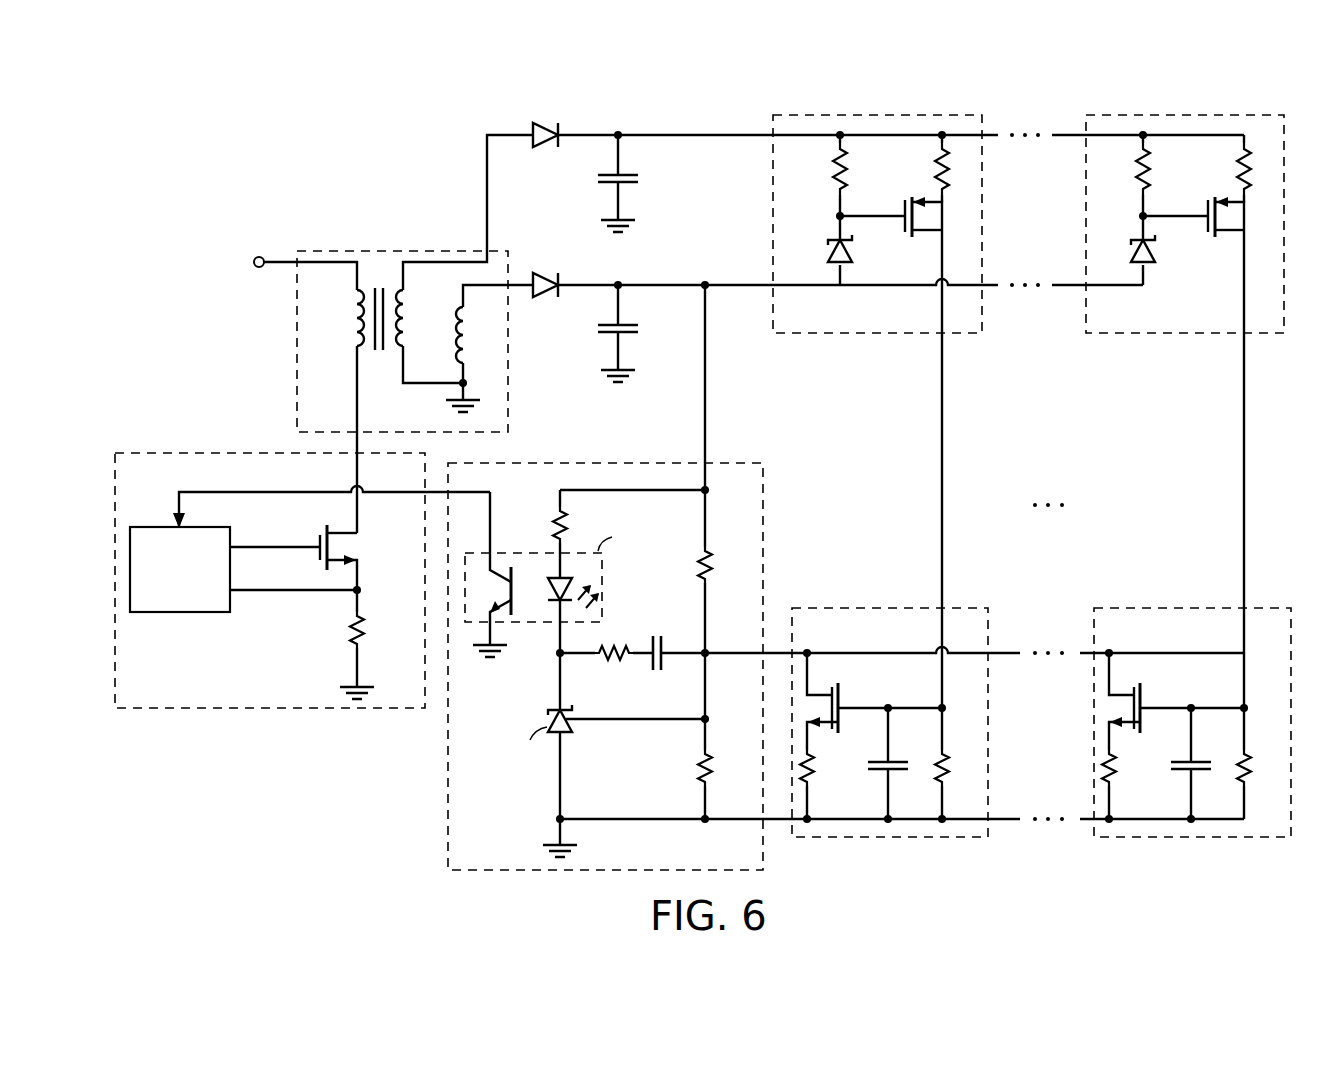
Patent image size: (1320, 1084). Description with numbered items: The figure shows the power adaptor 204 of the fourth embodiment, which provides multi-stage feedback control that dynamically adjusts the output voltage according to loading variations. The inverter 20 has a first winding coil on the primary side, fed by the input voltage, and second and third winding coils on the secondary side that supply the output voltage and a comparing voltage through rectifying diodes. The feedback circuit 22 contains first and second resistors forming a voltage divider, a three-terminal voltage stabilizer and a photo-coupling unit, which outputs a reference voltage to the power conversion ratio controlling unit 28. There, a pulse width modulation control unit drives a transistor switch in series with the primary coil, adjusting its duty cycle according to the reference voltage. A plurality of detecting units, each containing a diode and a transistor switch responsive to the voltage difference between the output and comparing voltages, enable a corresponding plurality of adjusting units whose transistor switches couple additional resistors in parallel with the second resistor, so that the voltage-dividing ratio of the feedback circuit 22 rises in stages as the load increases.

The power adaptor 204 is at (205, 146).
The inverter 20 is at (390, 250).
The feedback circuit 22 is at (676, 462).
The power conversion ratio controlling unit 28 is at (146, 451).